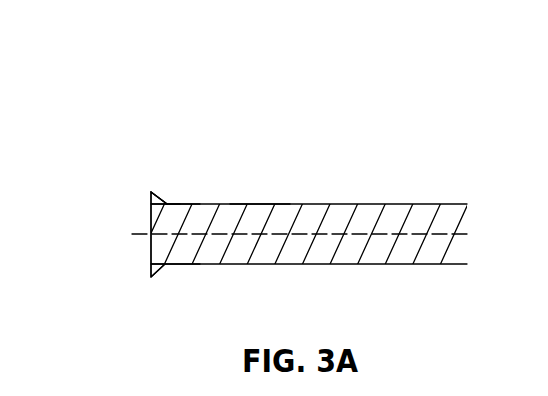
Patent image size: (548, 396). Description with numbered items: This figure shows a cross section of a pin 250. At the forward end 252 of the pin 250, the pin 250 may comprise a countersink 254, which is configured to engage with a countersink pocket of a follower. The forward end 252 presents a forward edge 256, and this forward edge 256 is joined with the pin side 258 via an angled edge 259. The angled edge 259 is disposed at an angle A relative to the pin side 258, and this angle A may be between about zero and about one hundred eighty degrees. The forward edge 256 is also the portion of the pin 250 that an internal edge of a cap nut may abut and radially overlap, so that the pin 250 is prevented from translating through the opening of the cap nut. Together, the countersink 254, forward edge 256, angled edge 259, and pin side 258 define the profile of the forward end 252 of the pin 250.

The pin 250 is at (323, 207).
The forward end 252 is at (141, 146).
The countersink 254 is at (155, 249).
The forward edge 256 is at (152, 212).
The pin side 258 is at (257, 204).
The angled edge 259 is at (158, 197).
The angle A is at (180, 191).